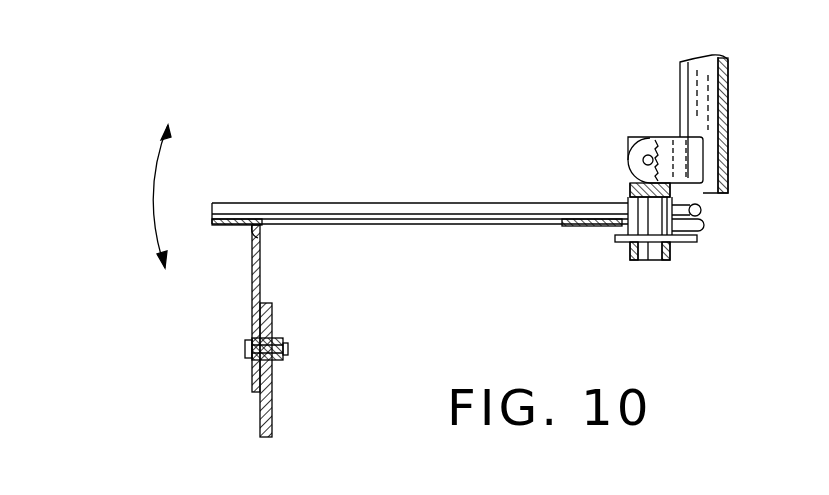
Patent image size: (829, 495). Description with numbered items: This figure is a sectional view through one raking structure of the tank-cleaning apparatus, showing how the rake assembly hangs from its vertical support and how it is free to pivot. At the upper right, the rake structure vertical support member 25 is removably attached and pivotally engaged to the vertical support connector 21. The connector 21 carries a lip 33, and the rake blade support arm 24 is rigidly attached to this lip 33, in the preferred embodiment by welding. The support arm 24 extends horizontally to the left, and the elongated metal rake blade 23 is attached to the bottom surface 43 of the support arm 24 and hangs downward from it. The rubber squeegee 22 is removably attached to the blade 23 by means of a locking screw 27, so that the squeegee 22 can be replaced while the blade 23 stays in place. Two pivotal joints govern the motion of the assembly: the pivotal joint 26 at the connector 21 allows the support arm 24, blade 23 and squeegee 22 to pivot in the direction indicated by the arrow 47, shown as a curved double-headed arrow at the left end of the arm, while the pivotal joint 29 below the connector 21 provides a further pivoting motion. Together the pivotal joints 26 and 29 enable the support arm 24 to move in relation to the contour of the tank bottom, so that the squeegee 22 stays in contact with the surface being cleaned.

The vertical support connector 21 is at (627, 166).
The rubber squeegee 22 is at (272, 400).
The elongated metal rake blade 23 is at (261, 263).
The rake blade support arm 24 is at (405, 210).
The rake structure vertical support member 25 is at (708, 108).
The pivotal joint 26 is at (650, 152).
The locking screw 27 is at (245, 349).
The pivotal joint 29 is at (692, 242).
The lip 33 is at (580, 229).
The bottom surface 43 is at (273, 226).
The arrow 47 is at (152, 196).